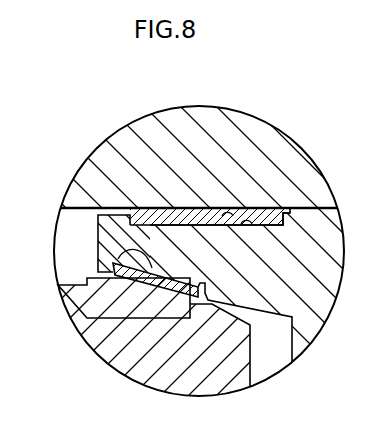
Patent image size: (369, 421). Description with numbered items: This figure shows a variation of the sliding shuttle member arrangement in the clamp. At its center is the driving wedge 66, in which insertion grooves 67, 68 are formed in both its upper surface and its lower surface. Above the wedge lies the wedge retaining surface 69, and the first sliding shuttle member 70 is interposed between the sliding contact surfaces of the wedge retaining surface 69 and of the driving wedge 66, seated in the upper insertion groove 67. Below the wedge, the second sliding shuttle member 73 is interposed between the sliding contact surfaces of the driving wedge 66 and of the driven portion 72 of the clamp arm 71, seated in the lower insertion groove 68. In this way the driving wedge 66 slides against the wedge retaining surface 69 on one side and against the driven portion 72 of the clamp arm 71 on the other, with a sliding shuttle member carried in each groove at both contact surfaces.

The driving wedge 66 is at (105, 226).
The insertion groove 67 is at (252, 224).
The insertion groove 68 is at (165, 276).
The wedge retaining surface 69 is at (240, 212).
The first sliding shuttle member 70 is at (186, 213).
The clamp arm 71 is at (132, 366).
The driven portion 72 is at (118, 259).
The second sliding shuttle member 73 is at (117, 287).